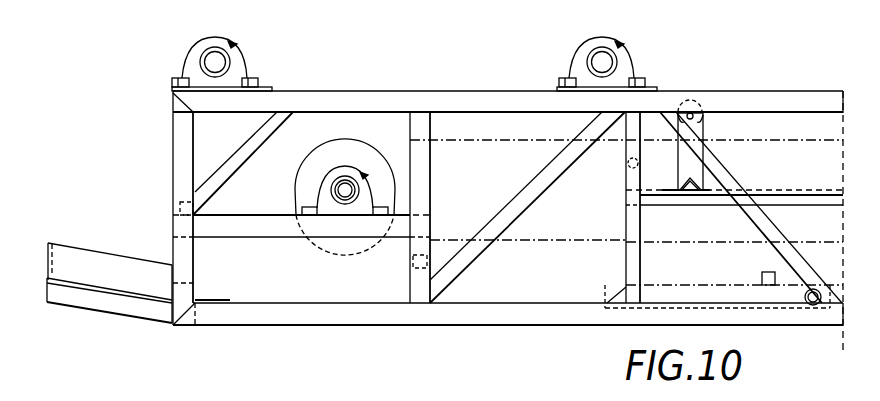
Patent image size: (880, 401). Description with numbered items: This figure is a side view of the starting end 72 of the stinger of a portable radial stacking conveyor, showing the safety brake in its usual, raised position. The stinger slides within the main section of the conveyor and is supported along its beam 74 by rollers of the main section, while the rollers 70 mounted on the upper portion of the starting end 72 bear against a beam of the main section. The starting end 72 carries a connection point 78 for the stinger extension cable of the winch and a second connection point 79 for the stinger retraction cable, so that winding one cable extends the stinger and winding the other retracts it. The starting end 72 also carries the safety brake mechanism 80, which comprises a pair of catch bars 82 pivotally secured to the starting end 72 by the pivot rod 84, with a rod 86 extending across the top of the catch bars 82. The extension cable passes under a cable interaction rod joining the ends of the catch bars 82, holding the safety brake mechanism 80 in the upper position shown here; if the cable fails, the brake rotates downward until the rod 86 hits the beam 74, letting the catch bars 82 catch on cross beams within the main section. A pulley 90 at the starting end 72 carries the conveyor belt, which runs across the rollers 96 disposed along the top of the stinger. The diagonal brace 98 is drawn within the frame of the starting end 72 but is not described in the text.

The rollers 70 is at (225, 50).
The starting end 72 is at (356, 345).
The beam 74 is at (507, 317).
The connection point 78 is at (200, 299).
The second connection point 79 is at (47, 262).
The safety brake mechanism 80 is at (685, 290).
The catch bars 82 is at (725, 290).
The pivot rod 84 is at (813, 305).
The rod 86 is at (768, 271).
The pulley 90 is at (322, 158).
The rollers 96 is at (688, 105).
The diagonal brace 98 is at (503, 143).